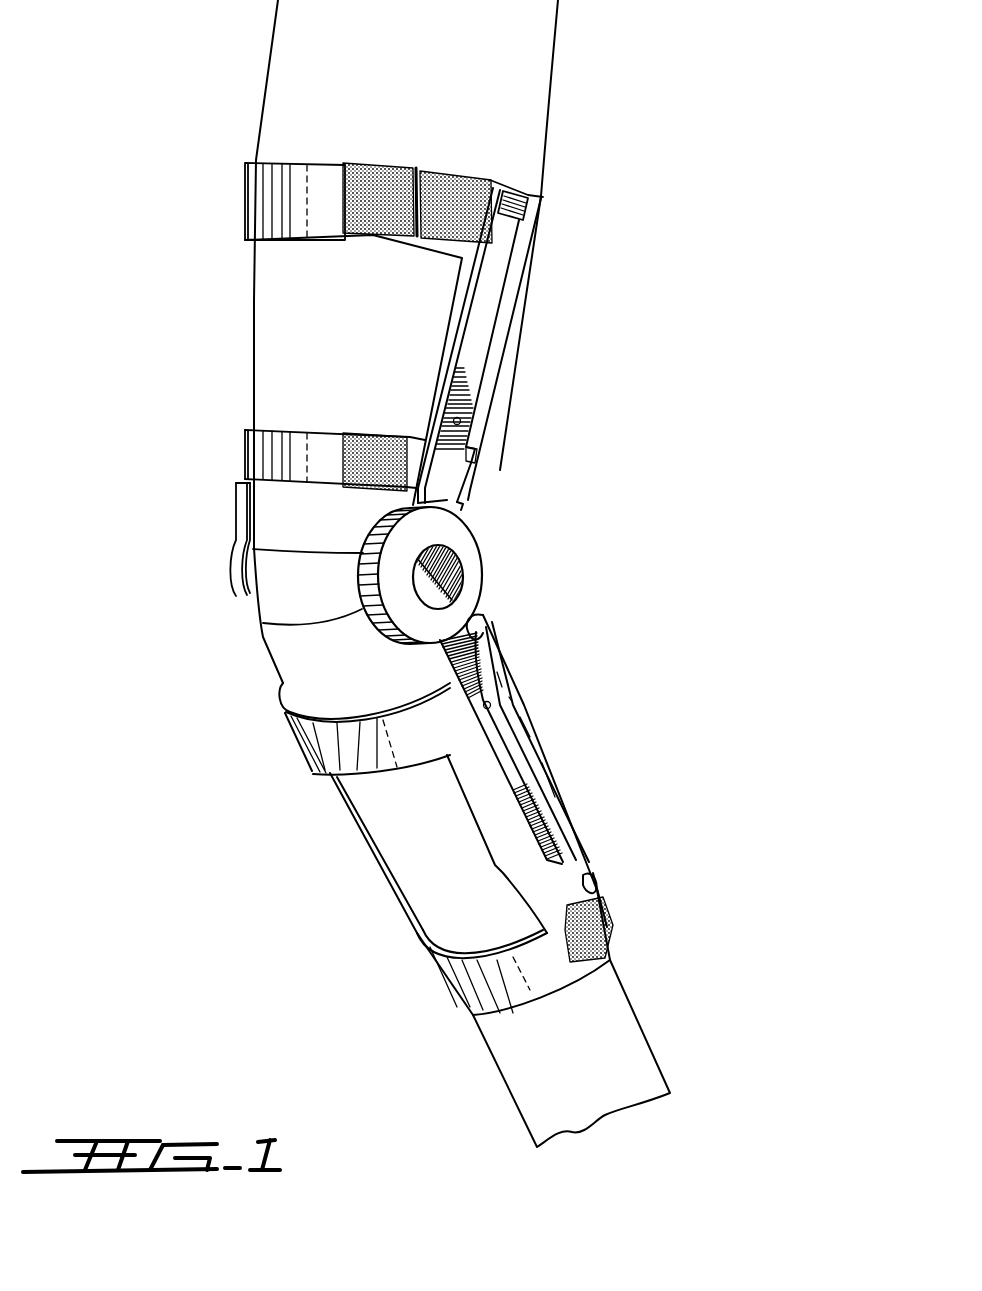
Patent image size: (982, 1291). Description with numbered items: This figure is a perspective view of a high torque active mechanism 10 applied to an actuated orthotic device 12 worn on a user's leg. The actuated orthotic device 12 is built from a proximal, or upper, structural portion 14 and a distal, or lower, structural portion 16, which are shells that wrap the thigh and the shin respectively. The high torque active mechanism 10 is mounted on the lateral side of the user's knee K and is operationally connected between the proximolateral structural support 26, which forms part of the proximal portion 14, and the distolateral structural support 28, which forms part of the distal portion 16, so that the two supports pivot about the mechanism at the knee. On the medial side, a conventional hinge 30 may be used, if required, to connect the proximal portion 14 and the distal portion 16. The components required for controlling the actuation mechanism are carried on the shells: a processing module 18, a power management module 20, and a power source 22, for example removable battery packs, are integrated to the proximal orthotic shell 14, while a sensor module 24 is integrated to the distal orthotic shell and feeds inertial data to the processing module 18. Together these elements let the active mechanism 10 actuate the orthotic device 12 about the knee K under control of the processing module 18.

The high torque active mechanism 10 is at (507, 534).
The actuated orthotic device 12 is at (281, 786).
The proximal structural portion 14 is at (438, 375).
The distal structural portion 16 is at (472, 819).
The processing module 18 is at (413, 172).
The power management module 20 is at (455, 210).
The power source 22 is at (477, 462).
The sensor module 24 is at (613, 925).
The proximolateral structural support 26 is at (475, 357).
The distolateral structural support 28 is at (510, 752).
The conventional hinge 30 is at (292, 578).
The knee K is at (284, 628).